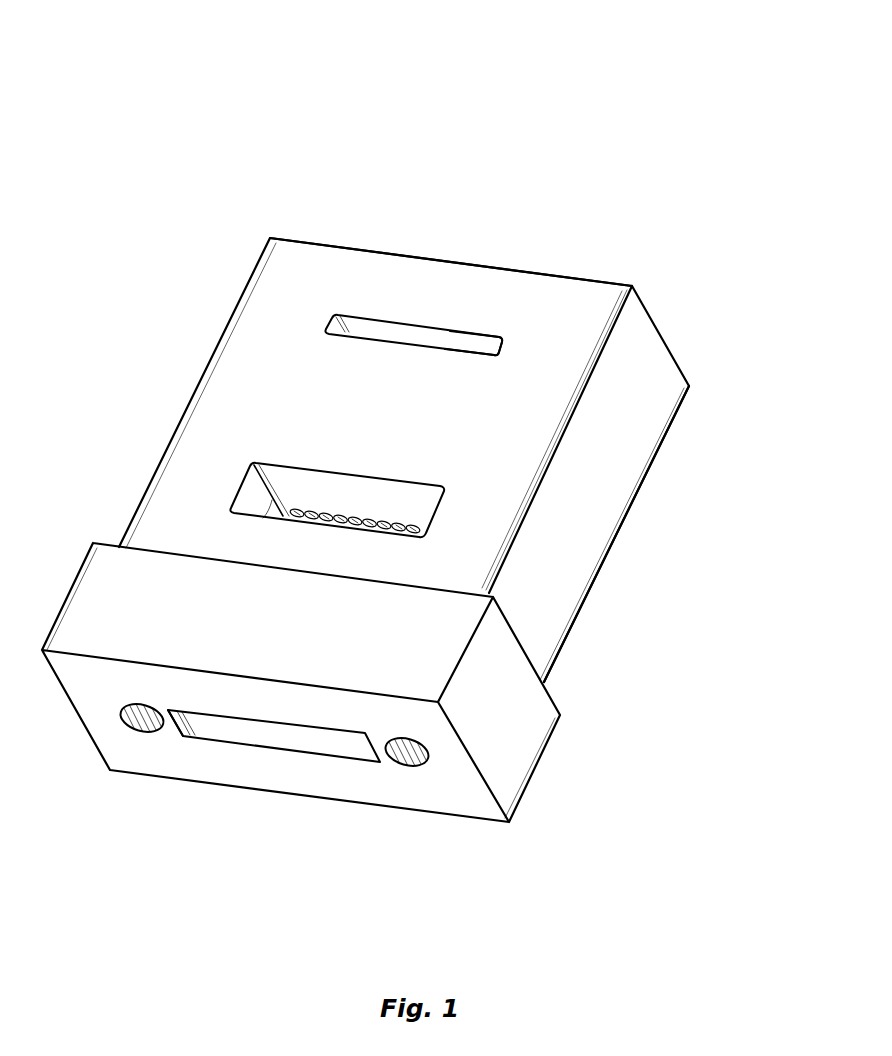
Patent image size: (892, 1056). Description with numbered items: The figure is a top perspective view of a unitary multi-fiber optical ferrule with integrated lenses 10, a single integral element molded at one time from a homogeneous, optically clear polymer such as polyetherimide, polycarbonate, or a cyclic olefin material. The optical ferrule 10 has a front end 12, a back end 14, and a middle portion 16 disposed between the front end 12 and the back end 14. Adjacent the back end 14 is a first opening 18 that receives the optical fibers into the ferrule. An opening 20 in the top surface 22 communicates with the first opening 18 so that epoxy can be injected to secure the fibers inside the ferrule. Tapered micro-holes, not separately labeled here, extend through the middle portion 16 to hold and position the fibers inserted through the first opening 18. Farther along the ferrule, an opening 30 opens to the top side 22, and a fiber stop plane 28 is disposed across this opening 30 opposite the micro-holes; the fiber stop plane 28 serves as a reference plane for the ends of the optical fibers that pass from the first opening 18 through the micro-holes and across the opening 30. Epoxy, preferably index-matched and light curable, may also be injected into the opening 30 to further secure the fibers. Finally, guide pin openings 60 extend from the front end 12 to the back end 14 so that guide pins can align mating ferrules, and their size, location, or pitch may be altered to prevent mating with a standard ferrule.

The unitary multi-fiber optical ferrule with integrated lenses 10 is at (313, 126).
The front end 12 is at (664, 326).
The back end 14 is at (470, 795).
The middle portion 16 is at (638, 515).
The first opening 18 is at (310, 744).
The opening 20 is at (444, 497).
The top surface 22 is at (295, 402).
The fiber stop plane 28 is at (399, 332).
The opening 30 is at (473, 343).
The guide pin openings 60 is at (148, 727).